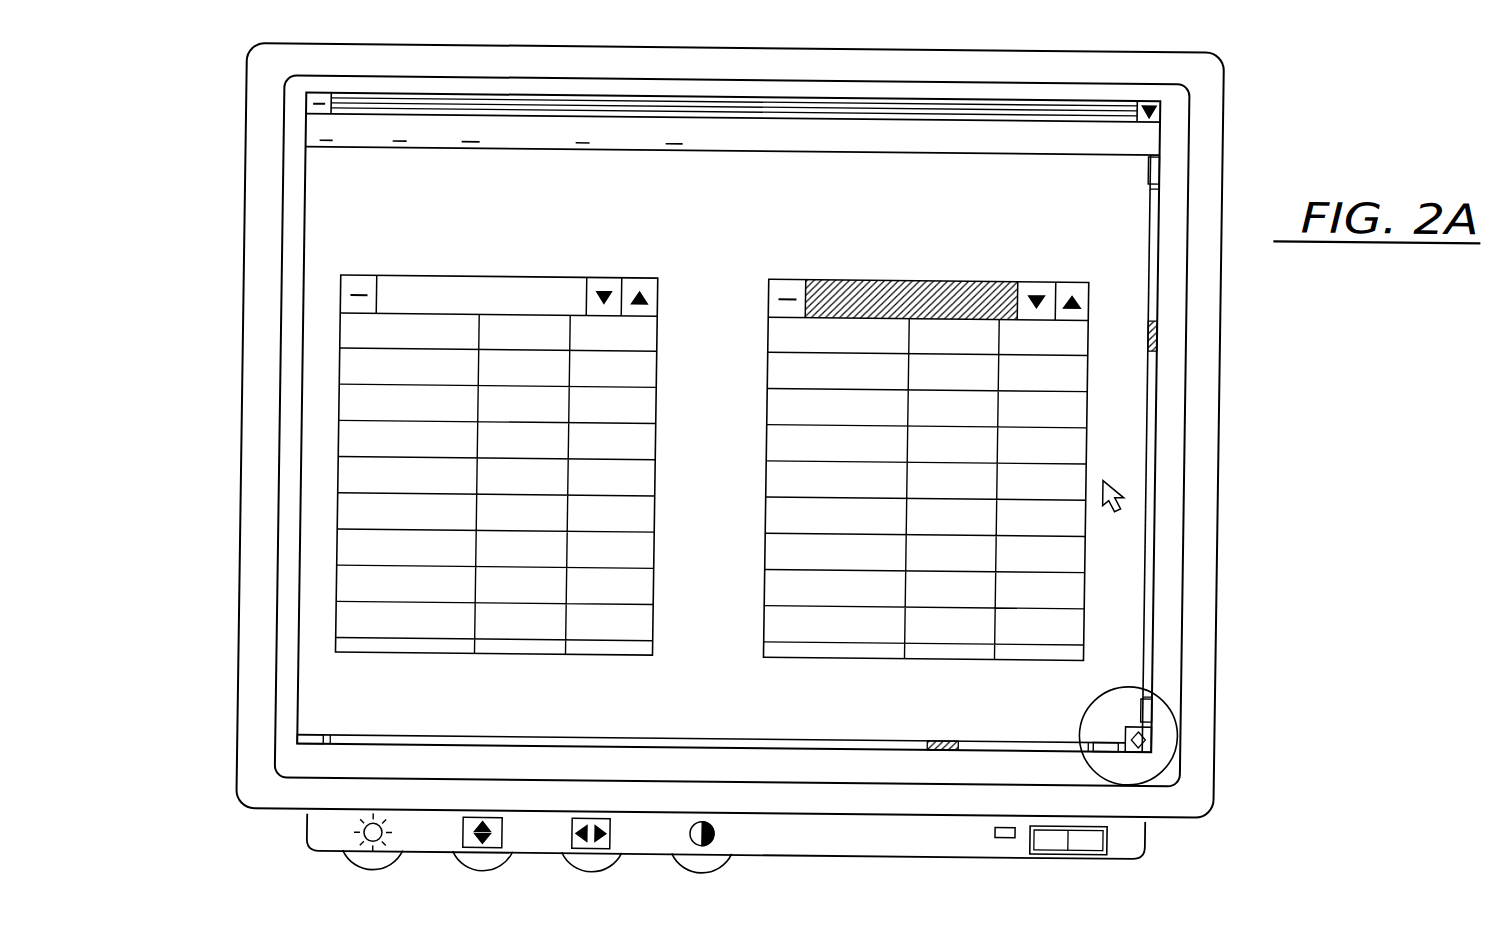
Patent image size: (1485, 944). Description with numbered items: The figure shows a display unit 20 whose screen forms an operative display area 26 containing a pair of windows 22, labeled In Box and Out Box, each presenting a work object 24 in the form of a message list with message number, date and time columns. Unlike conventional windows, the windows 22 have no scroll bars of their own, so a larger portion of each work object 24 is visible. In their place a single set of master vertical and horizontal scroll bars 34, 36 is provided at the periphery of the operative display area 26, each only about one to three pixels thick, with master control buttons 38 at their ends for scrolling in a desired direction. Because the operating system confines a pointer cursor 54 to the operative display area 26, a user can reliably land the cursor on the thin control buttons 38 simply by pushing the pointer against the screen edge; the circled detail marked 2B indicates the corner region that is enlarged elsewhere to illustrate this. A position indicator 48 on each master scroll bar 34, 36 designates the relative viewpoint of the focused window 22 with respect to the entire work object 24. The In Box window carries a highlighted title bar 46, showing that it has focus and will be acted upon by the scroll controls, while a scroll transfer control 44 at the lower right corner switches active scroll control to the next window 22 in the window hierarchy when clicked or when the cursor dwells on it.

The display unit 20 is at (1216, 592).
The window 22 is at (631, 447).
The work object 24 is at (368, 499).
The operative display area 26 is at (707, 209).
The master vertical scroll bar 34 is at (1155, 445).
The master horizontal scroll bar 36 is at (847, 738).
The master control button 38 is at (1159, 170).
The scroll transfer control 44 is at (1155, 740).
The highlighted title bar 46 is at (833, 275).
The position indicator 48 is at (1161, 323).
The pointer cursor 54 is at (1124, 504).
The detail area shown in FIG. 2B is at (1196, 693).